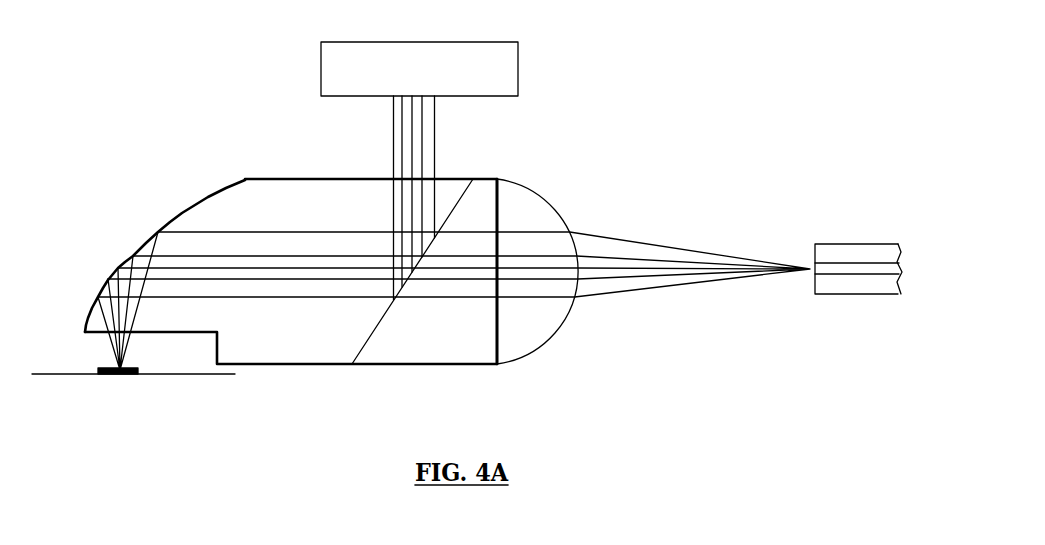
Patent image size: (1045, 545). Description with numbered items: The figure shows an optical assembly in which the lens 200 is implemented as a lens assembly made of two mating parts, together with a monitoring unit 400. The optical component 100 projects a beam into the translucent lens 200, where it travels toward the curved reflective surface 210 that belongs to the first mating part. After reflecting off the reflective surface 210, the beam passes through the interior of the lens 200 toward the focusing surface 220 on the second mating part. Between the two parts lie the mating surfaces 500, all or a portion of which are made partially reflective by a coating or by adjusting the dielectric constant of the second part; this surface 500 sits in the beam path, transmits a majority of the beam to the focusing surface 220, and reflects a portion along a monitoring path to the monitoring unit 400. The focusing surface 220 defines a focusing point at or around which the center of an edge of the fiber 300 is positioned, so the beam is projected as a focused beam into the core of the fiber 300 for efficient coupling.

The optical component 100 is at (102, 379).
The lens 200 is at (300, 183).
The curved reflective surface 210 is at (183, 198).
The focusing surface 220 is at (535, 190).
The fiber 300 is at (852, 237).
The monitoring unit 400 is at (497, 42).
The mating surfaces 500 is at (370, 335).